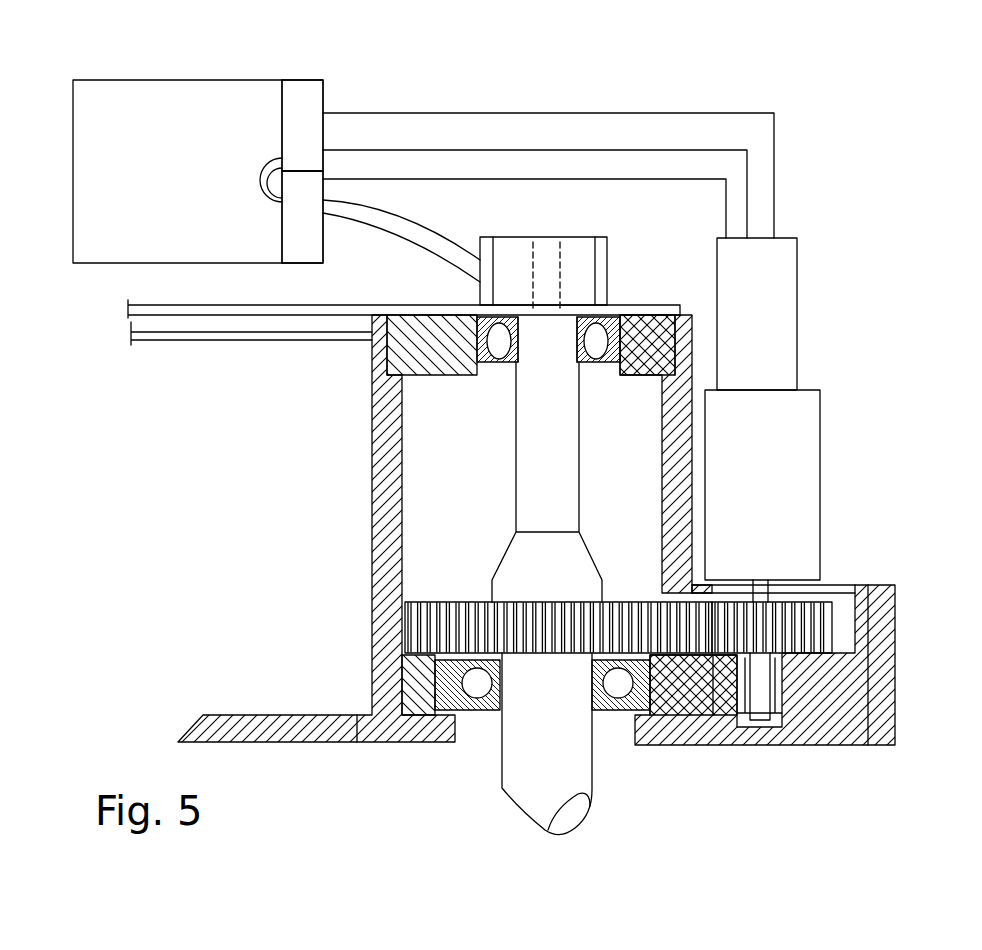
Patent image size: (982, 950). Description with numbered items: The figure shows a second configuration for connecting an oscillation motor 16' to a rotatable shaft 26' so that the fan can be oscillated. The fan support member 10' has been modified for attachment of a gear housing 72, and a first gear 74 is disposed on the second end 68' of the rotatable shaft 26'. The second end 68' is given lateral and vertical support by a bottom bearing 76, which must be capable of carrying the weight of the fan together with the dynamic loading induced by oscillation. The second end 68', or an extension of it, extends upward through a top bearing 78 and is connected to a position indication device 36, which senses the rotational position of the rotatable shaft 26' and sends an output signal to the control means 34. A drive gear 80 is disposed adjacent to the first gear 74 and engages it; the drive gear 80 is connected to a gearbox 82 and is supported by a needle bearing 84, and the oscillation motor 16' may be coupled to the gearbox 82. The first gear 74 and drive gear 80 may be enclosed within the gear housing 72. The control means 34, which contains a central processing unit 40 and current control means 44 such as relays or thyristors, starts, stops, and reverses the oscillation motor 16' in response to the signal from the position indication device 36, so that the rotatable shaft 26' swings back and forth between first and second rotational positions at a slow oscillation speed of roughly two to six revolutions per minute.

The control means 34 is at (128, 80).
The current control means 44 is at (311, 137).
The central processing unit 40 is at (311, 234).
The position indication device 36 is at (572, 237).
The oscillation motor 16' is at (757, 314).
The gearbox 82 is at (767, 499).
The gear housing 72 is at (372, 527).
The top bearing 78 is at (498, 365).
The bottom bearing 76 is at (470, 715).
The second end of rotatable shaft 68' is at (513, 598).
The first gear 74 is at (450, 602).
The drive gear 80 is at (828, 625).
The needle bearing 84 is at (773, 713).
The rotatable shaft 26' is at (672, 807).
The fan support member 10' is at (254, 797).